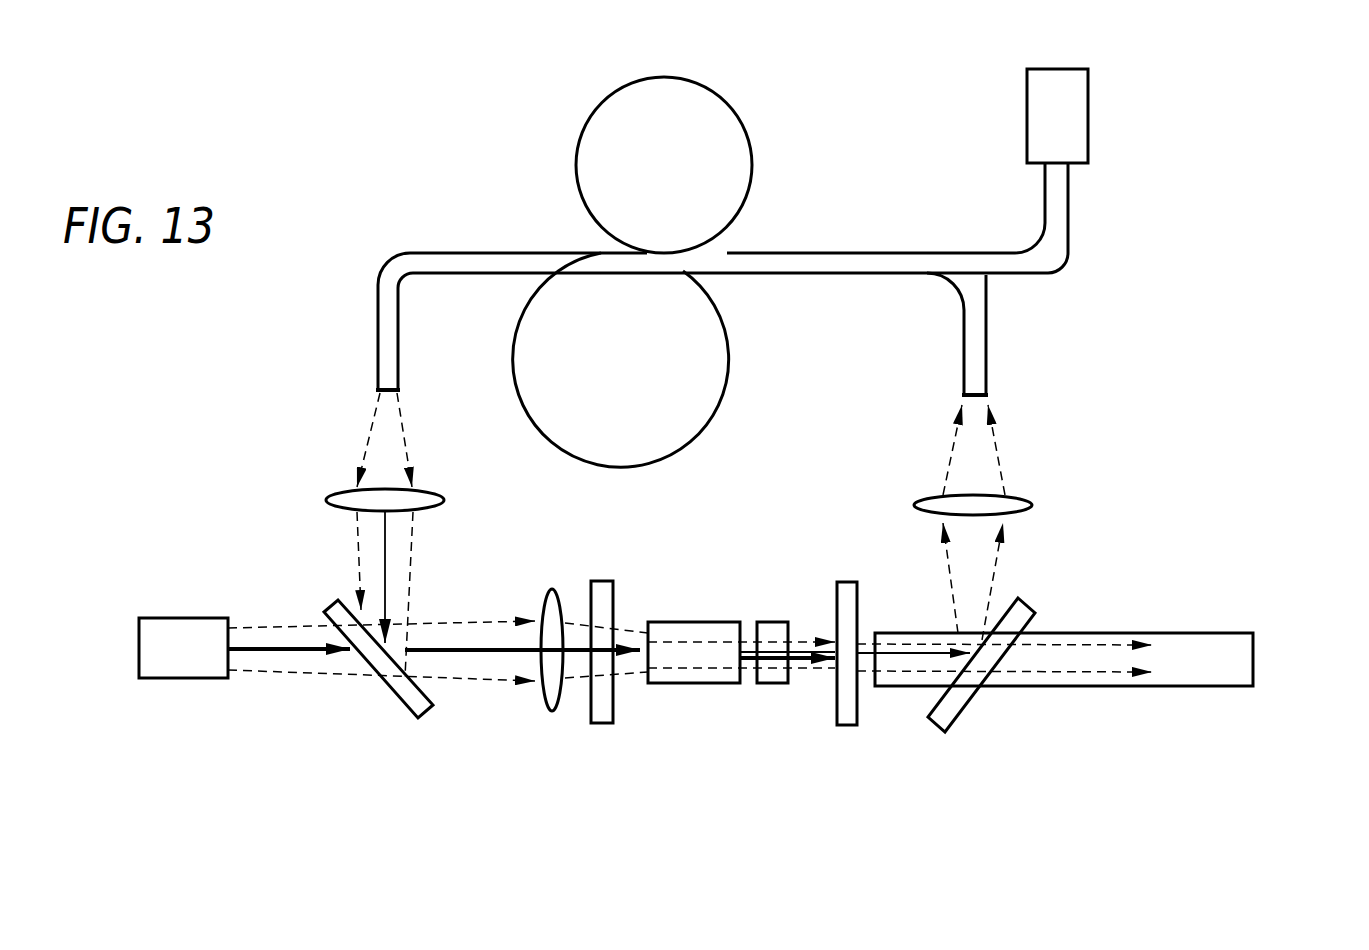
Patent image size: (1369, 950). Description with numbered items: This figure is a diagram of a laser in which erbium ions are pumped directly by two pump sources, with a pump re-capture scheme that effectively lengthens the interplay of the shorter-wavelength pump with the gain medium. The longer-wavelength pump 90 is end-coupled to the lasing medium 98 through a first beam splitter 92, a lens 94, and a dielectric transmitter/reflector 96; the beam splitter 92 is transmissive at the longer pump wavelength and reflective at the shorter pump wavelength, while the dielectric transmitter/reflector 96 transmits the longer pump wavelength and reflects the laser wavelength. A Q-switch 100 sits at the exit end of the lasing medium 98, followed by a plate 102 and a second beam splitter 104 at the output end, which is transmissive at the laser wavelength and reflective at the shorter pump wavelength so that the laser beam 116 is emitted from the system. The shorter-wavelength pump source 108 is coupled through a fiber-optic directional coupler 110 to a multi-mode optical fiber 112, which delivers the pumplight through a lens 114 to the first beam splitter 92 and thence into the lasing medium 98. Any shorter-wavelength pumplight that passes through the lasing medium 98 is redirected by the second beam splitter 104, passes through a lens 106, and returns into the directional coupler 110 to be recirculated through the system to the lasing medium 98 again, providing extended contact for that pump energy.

The 1540 nanometer pump 90 is at (190, 678).
The beam splitter 92 is at (385, 680).
The lens 94 is at (552, 711).
The dielectric transmitter/reflector 96 is at (608, 723).
The lasing medium 98 is at (695, 683).
The Q-switch 100 is at (775, 684).
The optical plate 102 is at (857, 708).
The second beam splitter 104 is at (972, 694).
The lens 106 is at (1027, 502).
The 970 nanometer pump source 108 is at (1027, 117).
The fiber-optic directional coupler 110 is at (917, 253).
The multi-mode optical fiber 112 is at (576, 107).
The lens 114 is at (335, 487).
The laser beam 116 is at (1212, 598).